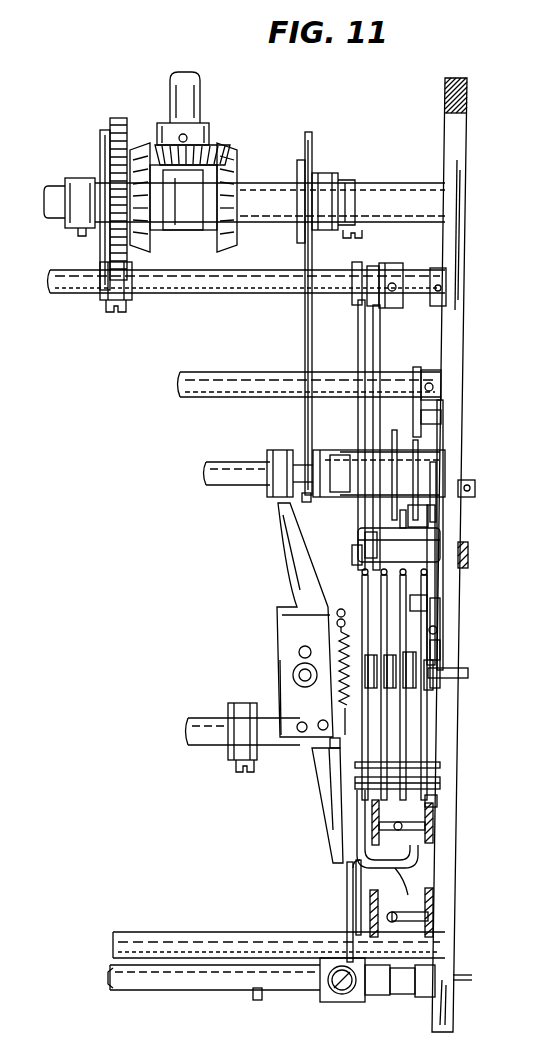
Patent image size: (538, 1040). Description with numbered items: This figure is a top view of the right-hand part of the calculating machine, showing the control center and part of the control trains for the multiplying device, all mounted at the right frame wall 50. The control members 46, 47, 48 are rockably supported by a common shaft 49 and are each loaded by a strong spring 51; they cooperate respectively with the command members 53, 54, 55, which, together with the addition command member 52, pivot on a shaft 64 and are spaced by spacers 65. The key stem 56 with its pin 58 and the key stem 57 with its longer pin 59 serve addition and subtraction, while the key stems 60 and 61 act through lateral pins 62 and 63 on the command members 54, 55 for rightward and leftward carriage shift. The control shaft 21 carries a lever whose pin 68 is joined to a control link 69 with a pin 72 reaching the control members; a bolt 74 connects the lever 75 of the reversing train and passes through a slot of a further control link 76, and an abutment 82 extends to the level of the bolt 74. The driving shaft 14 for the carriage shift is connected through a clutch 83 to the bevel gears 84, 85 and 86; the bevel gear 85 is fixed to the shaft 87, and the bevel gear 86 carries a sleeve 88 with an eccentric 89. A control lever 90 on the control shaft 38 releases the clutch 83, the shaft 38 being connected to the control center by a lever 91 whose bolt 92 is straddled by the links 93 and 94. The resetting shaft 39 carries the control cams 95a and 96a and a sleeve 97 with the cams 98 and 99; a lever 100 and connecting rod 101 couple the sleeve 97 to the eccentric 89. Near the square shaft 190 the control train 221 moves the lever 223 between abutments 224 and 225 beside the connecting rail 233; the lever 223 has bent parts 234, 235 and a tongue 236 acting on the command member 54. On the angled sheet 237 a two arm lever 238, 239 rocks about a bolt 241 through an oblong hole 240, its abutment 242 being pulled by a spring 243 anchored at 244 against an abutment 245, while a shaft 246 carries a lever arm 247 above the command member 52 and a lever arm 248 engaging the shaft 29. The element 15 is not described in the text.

The driving shaft 14 is at (60, 184).
The bar 15 is at (428, 540).
The control shaft 21 is at (195, 372).
The shaft 29 is at (208, 718).
The control shaft 38 is at (180, 294).
The resetting shaft 39 is at (212, 462).
The control member 46 is at (365, 528).
The control member 47 is at (365, 540).
The control member 48 is at (352, 550).
The common shaft 49 is at (469, 553).
The right frame wall 50 is at (463, 303).
The springs 51 is at (362, 572).
The command member 52 is at (438, 648).
The command member 53 is at (420, 616).
The command member 54 is at (440, 628).
The command member 55 is at (330, 833).
The key stem 56 is at (437, 800).
The key stem 57 is at (372, 806).
The pin 58 is at (434, 826).
The pin 59 is at (398, 831).
The key stem 60 is at (434, 900).
The key stem 61 is at (417, 367).
The lateral pin 62 is at (410, 912).
The lateral pin 63 is at (356, 900).
The shaft 64 is at (455, 671).
The spacers 65 is at (406, 690).
The pin 68 is at (441, 416).
The control link 69 is at (444, 432).
The pin 72 is at (428, 600).
The bolt 74 is at (437, 475).
The lever 75 is at (476, 486).
The control link 76 is at (435, 520).
The abutment 82 is at (406, 514).
The clutch 83 is at (120, 117).
The bevel gear 84 is at (140, 238).
The bevel gear 85 is at (208, 143).
The bevel gear 86 is at (238, 156).
The shaft 87 is at (198, 76).
The sleeve 88 is at (330, 173).
The eccentric 89 is at (312, 136).
The control lever 90 is at (102, 296).
The lever 91 is at (375, 266).
The bolt 92 is at (354, 272).
The link 93 is at (380, 323).
The link 94 is at (358, 319).
The control cam 95a is at (416, 450).
The control cam 96a is at (392, 430).
The sleeve 97 is at (306, 502).
The control cam 98 is at (350, 468).
The control cam 99 is at (342, 454).
The lever 100 is at (280, 450).
The connecting rod 101 is at (305, 328).
The square shaft 190 is at (108, 977).
The control train 221 is at (140, 986).
The lever 223 is at (350, 925).
The abutment 224 is at (258, 1000).
The abutment 225 is at (398, 995).
The connecting rail 233 is at (180, 942).
The rectangularly bent part 234 is at (347, 878).
The rectangularly bent part 235 is at (408, 868).
The tongue 236 is at (378, 870).
The angled metal sheet 237 is at (282, 612).
The lever arm 238 is at (280, 514).
The lever arm 239 is at (330, 846).
The oblong hole 240 is at (298, 652).
The bolt 241 is at (292, 675).
The abutment 242 is at (325, 740).
The spring 243 is at (338, 700).
The spring connection point 244 is at (318, 620).
The abutment 245 is at (345, 618).
The shaft 246 is at (410, 781).
The lever arm 247 is at (420, 765).
The lever arm 248 is at (332, 748).